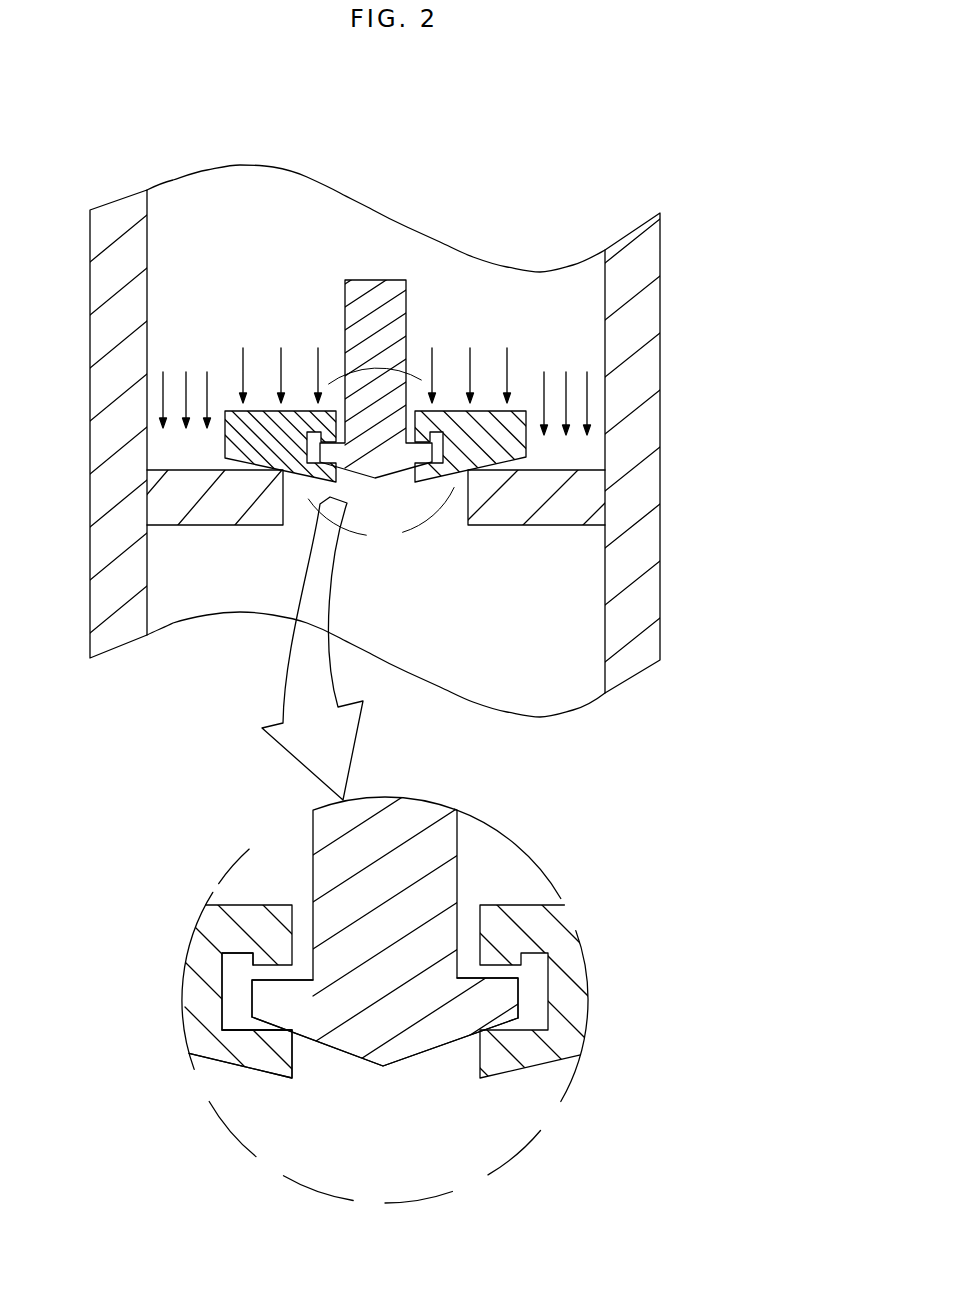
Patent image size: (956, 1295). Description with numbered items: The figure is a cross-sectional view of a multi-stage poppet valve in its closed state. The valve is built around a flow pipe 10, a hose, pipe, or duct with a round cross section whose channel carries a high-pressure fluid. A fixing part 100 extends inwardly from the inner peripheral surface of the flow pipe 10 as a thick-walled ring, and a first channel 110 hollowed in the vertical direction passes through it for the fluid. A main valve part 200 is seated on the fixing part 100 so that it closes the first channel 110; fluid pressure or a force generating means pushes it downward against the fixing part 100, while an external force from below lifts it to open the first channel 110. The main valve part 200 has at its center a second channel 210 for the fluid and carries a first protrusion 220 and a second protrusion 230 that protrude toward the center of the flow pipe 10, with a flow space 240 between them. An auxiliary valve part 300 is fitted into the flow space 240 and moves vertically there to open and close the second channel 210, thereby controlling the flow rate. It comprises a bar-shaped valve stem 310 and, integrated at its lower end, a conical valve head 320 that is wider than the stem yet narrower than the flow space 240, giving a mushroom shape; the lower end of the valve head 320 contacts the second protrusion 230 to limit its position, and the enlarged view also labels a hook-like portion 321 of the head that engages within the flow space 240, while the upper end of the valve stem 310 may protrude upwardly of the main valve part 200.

The flow pipe 10 is at (118, 218).
The fixing part 100 is at (508, 520).
The first channel 110 is at (338, 530).
The main valve part 200 is at (530, 443).
The second channel 210 is at (481, 893).
The first protrusion 220 is at (288, 940).
The second protrusion 230 is at (273, 1062).
The flow space 240 is at (238, 975).
The auxiliary valve part 300 is at (375, 278).
The valve stem 310 is at (440, 842).
The valve head 320 is at (405, 1040).
The hook protrusion 321 is at (282, 990).